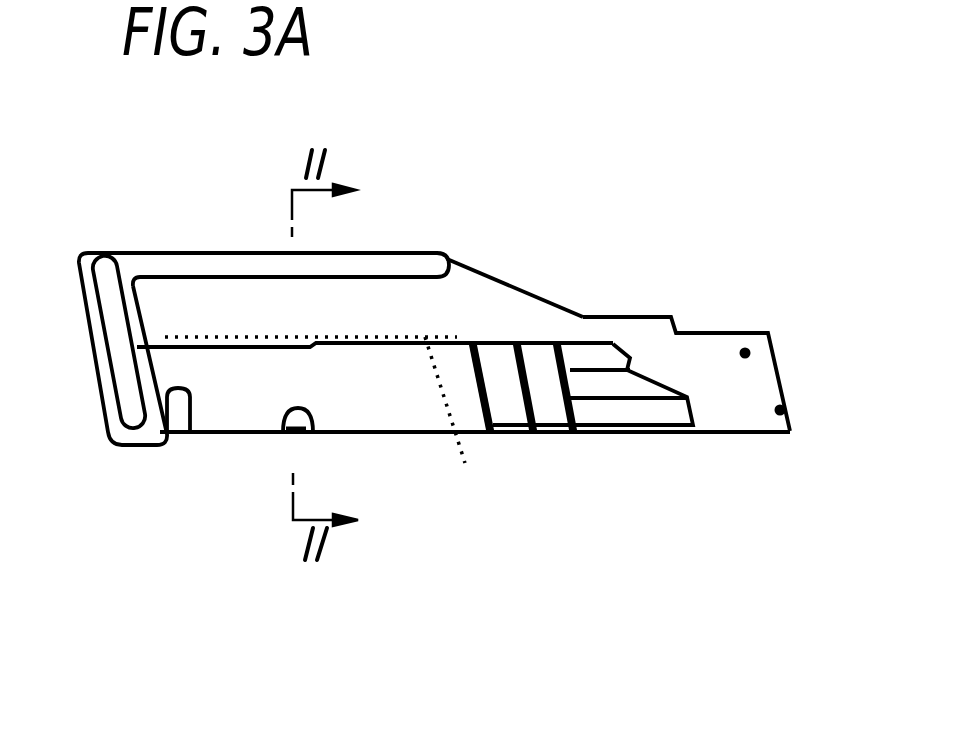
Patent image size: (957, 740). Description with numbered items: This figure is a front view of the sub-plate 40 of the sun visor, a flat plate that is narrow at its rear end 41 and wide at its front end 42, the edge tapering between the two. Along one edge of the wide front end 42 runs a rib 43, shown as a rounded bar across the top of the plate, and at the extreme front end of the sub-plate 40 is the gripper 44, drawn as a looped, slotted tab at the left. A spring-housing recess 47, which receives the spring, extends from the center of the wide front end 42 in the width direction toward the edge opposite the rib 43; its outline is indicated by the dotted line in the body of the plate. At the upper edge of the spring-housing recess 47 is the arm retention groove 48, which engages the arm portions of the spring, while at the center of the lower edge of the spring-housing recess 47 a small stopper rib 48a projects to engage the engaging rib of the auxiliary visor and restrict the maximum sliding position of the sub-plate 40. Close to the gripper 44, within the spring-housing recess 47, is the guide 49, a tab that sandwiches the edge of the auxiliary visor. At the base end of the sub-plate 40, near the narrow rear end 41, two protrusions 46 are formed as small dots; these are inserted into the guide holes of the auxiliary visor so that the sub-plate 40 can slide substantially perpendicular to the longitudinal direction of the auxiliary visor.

The sub-plate 40 is at (116, 219).
The rear end 41 is at (720, 407).
The front end 42 is at (207, 317).
The rib 43 is at (395, 263).
The gripper 44 is at (123, 392).
The protrusions 46 is at (750, 353).
The spring-housing recess 47 is at (385, 400).
The arm retention groove 48 is at (322, 421).
The stopper rib 48a is at (280, 420).
The guide 49 is at (183, 432).